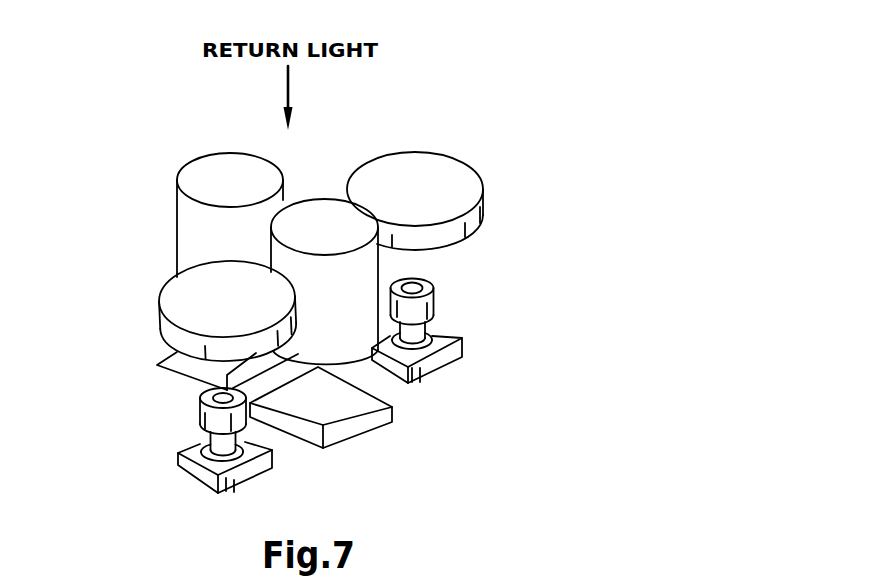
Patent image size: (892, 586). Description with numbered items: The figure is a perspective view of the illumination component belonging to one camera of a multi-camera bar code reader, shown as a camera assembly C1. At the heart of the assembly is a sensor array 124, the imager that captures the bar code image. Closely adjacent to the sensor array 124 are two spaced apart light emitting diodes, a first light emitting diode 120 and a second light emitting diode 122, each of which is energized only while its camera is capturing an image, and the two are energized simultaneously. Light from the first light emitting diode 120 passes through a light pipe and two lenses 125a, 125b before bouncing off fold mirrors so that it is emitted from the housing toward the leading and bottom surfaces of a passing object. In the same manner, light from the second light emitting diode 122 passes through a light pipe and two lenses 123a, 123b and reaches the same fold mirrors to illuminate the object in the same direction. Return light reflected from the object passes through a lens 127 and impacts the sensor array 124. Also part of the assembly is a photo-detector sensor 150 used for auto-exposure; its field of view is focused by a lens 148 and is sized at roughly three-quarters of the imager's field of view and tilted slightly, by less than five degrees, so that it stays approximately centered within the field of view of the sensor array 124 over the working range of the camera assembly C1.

The camera assembly C1 is at (518, 99).
The lens 148 is at (205, 230).
The lens 125a is at (440, 170).
The lens 127 is at (349, 274).
The lens 123a is at (193, 272).
The photo-detector sensor 150 is at (207, 364).
The sensor array 124 is at (334, 408).
The second light emitting diode 122 is at (247, 452).
The lens 123b is at (202, 412).
The first light emitting diode 120 is at (421, 345).
The lens 125b is at (435, 297).